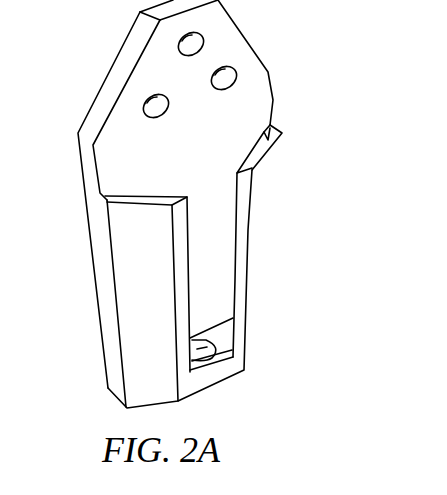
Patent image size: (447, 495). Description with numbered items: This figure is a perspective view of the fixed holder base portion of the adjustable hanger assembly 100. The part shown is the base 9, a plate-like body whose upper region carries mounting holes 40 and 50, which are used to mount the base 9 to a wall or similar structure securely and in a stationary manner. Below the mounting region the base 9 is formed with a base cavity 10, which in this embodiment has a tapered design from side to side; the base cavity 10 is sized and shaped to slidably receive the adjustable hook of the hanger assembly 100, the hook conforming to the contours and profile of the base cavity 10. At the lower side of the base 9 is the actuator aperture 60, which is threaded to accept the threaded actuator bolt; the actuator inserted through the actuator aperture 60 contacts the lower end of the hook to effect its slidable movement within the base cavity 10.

The adjustable hanger assembly 100 is at (213, 204).
The base 9 is at (160, 40).
The base cavity 10 is at (133, 195).
The mounting hole 40 is at (193, 42).
The mounting holes 50 is at (229, 78).
The actuator aperture 60 is at (215, 343).